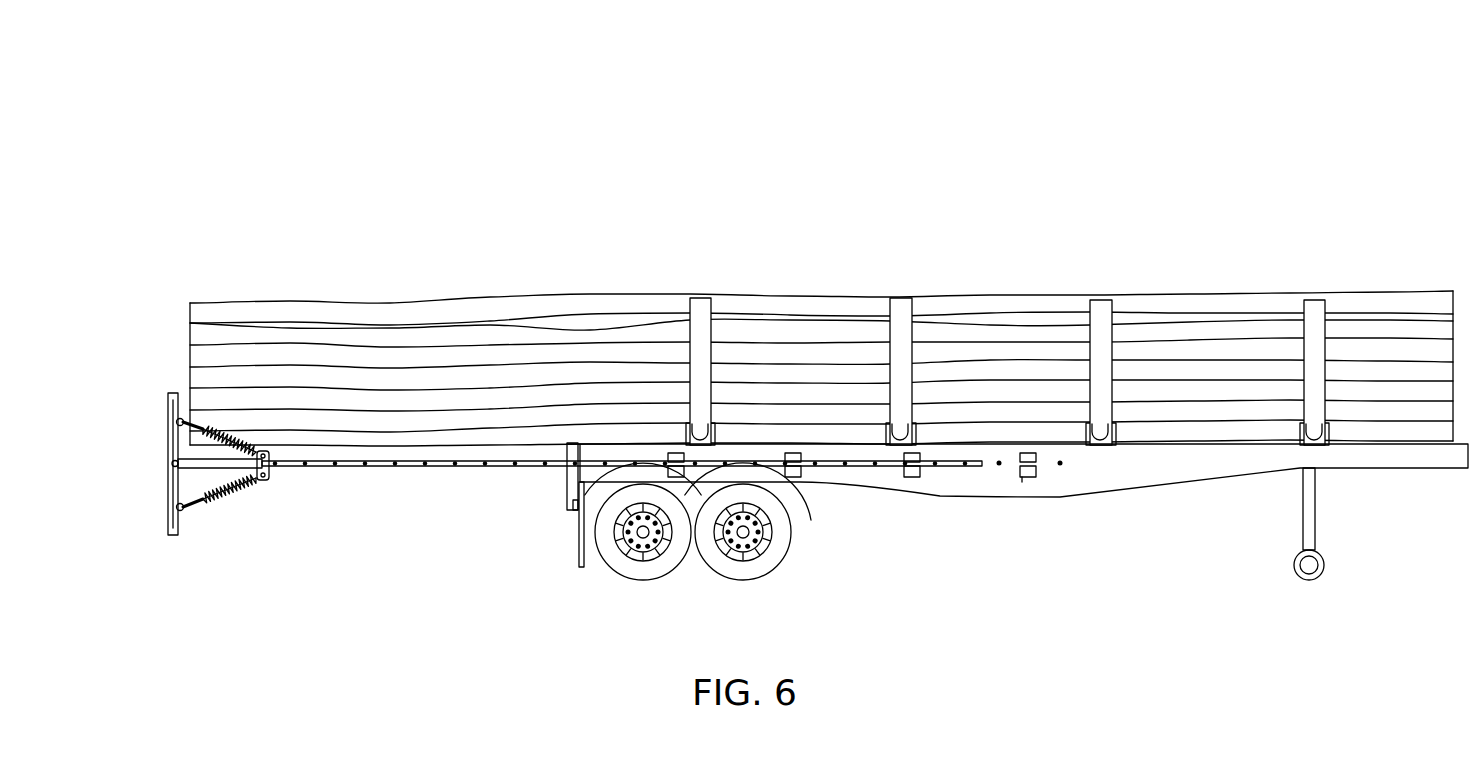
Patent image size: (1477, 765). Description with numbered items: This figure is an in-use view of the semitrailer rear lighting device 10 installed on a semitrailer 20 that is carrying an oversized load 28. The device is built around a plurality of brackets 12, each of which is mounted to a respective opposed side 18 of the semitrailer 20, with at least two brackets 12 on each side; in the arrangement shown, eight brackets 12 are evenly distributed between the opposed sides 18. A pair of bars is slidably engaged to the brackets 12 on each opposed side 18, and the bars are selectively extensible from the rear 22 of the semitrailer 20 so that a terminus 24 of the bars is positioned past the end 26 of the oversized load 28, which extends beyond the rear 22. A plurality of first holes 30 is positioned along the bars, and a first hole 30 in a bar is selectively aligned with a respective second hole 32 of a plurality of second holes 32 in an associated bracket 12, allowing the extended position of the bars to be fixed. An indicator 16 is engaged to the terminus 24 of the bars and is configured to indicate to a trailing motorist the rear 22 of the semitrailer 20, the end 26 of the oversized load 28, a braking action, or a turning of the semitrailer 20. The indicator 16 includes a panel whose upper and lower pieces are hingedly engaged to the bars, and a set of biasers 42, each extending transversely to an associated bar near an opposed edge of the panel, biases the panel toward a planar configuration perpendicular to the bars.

The semitrailer rear lighting device 10 is at (756, 145).
The bracket 12 is at (808, 478).
The indicator 16 is at (170, 522).
The opposed side 18 is at (1110, 470).
The semitrailer 20 is at (1407, 462).
The rear 22 is at (572, 478).
The terminus 24 is at (170, 462).
The end 26 is at (190, 325).
The oversized load 28 is at (1232, 328).
The first hole 30 is at (365, 467).
The second hole 32 is at (1060, 462).
The biaser 42 is at (225, 443).